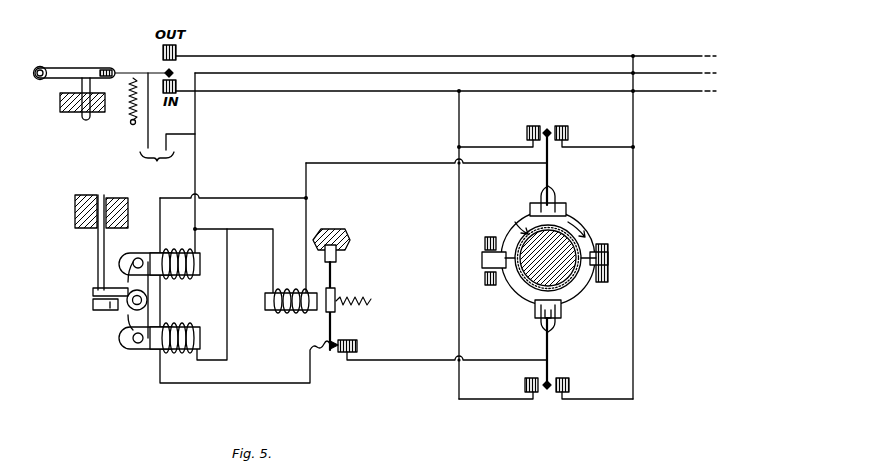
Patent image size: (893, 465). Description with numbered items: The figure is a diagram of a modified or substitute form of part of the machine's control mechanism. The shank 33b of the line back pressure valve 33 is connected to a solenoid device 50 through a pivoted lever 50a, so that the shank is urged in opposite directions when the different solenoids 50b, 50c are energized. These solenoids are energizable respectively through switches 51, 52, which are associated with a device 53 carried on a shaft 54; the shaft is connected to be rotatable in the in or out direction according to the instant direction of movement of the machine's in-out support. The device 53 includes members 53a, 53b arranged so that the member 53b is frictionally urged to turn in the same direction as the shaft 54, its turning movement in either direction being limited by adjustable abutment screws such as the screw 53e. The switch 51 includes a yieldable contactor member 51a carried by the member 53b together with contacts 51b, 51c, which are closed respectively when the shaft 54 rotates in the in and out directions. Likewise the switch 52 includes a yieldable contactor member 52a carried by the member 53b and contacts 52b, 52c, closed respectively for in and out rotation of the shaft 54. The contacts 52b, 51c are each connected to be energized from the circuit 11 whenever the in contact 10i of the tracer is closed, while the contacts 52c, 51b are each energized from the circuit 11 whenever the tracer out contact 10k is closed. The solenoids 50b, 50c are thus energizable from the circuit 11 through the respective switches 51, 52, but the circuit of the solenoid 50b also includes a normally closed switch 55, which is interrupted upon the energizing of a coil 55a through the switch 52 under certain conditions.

The tracer out contact 10k is at (176, 50).
The tracer in contact 10i is at (176, 92).
The circuit 11 is at (157, 167).
The line back pressure valve 33 is at (75, 215).
The shank 33b is at (97, 258).
The solenoid device 50 is at (120, 315).
The pivoted lever 50a is at (128, 332).
The solenoid 50b is at (167, 324).
The solenoid 50c is at (172, 279).
The normally closed switch 55 is at (347, 360).
The coil 55a is at (292, 312).
The switch 52 is at (548, 170).
The yieldable contactor member 52a is at (528, 172).
The contact 52b is at (532, 128).
The contact 52c is at (562, 128).
The device 53 is at (542, 256).
The member 53a is at (522, 345).
The member 53b is at (535, 293).
The adjustable abutment screw 53e is at (488, 240).
The shaft 54 is at (556, 272).
The switch 51 is at (540, 365).
The yieldable contactor member 51a is at (518, 359).
The contact 51b is at (570, 383).
The contact 51c is at (524, 384).